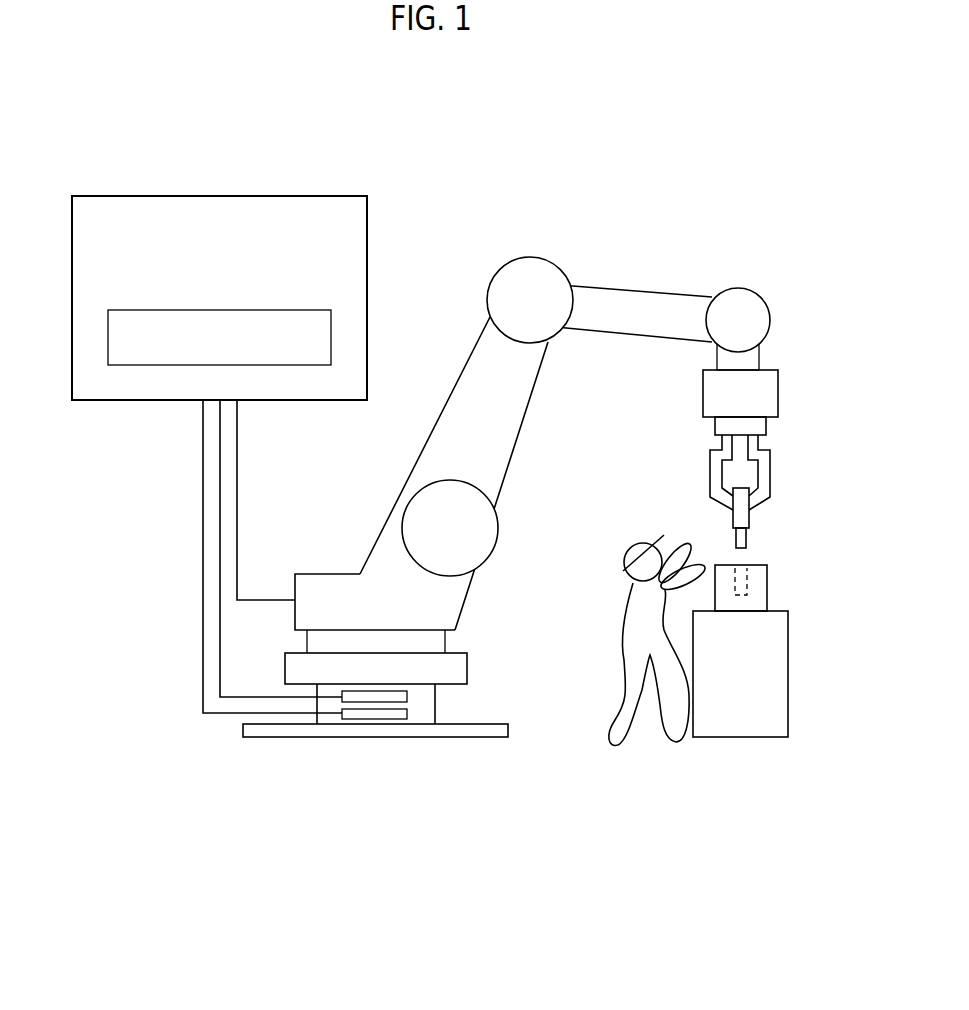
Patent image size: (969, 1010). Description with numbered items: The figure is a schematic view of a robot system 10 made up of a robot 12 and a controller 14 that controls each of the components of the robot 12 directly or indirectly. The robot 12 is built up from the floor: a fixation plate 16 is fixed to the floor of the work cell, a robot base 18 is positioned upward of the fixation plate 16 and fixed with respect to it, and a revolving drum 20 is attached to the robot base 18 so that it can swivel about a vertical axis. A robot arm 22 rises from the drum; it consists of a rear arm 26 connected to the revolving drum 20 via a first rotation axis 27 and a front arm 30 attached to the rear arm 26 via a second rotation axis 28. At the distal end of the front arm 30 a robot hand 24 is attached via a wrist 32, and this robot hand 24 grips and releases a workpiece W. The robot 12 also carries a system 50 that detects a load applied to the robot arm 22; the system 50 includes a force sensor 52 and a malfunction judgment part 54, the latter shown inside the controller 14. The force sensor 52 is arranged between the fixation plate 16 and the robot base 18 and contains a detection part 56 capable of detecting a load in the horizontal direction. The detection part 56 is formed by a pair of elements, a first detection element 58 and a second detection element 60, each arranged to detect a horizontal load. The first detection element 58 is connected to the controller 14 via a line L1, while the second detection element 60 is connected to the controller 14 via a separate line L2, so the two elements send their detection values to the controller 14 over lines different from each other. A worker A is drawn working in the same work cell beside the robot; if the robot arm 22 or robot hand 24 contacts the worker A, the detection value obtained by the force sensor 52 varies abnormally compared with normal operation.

The robot system 10 is at (764, 117).
The robot 12 is at (672, 225).
The controller 14 is at (312, 195).
The fixation plate 16 is at (485, 737).
The robot base 18 is at (467, 667).
The revolving drum 20 is at (472, 598).
The robot arm 22 is at (540, 407).
The robot hand 24 is at (783, 445).
The rear arm 26 is at (468, 380).
The first rotation axis 27 is at (498, 530).
The second rotation axis 28 is at (525, 257).
The front arm 30 is at (622, 285).
The wrist 32 is at (758, 293).
The system 50 is at (180, 713).
The force sensor 52 is at (436, 708).
The malfunction judgment part 54 is at (308, 310).
The detection part 56 is at (428, 822).
The first detection element 58 is at (353, 697).
The second detection element 60 is at (397, 714).
The line L1 is at (220, 678).
The line L2 is at (203, 622).
The workpiece W is at (752, 513).
The worker A is at (670, 742).